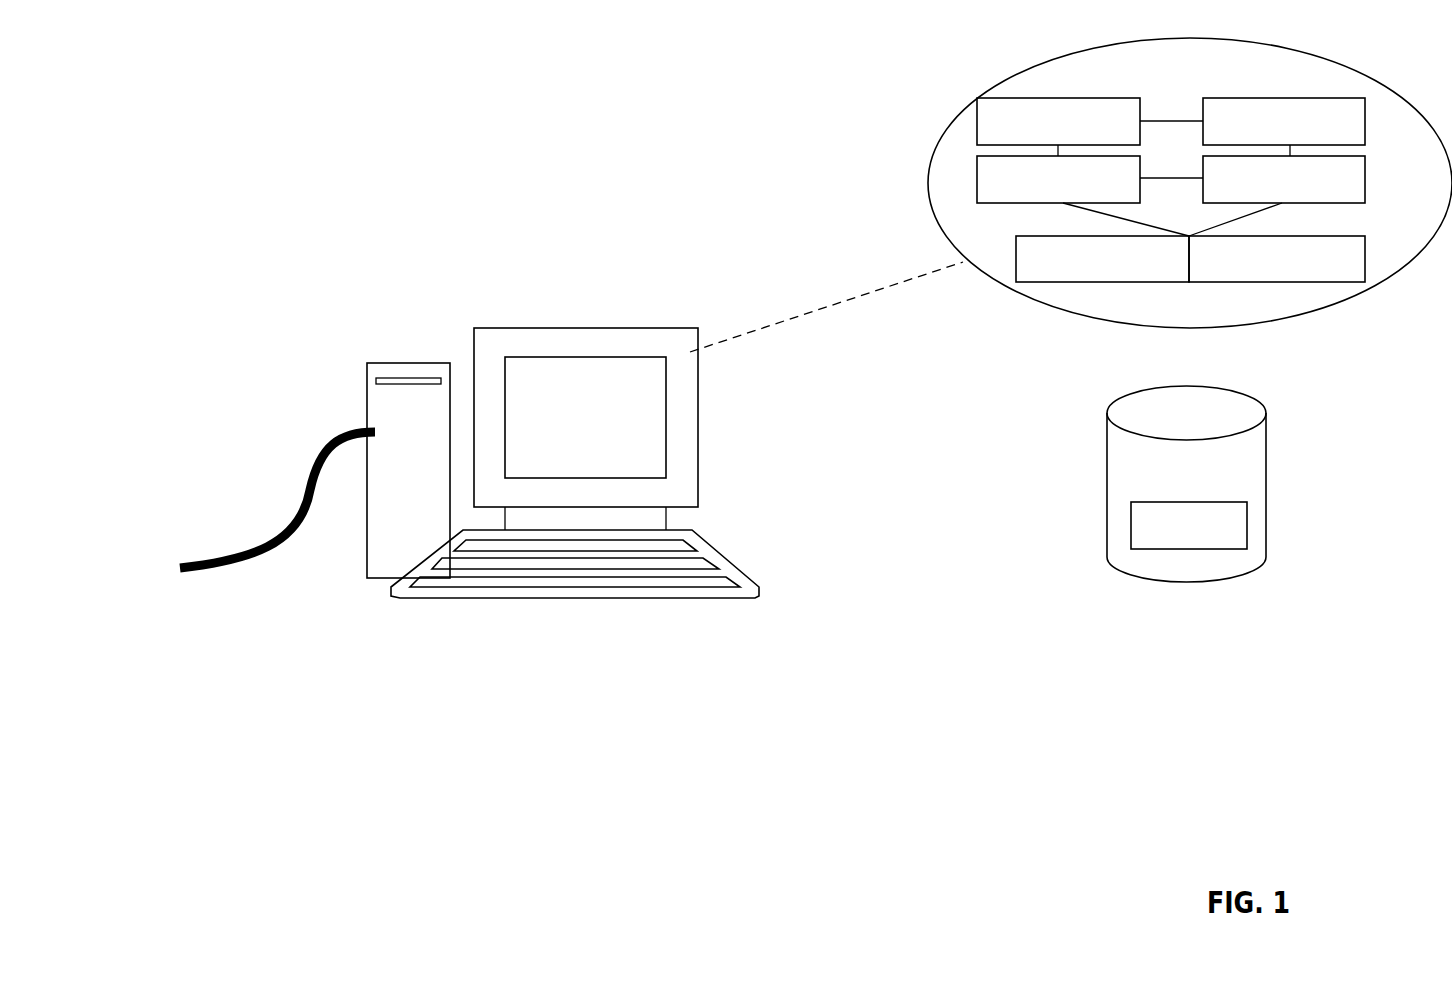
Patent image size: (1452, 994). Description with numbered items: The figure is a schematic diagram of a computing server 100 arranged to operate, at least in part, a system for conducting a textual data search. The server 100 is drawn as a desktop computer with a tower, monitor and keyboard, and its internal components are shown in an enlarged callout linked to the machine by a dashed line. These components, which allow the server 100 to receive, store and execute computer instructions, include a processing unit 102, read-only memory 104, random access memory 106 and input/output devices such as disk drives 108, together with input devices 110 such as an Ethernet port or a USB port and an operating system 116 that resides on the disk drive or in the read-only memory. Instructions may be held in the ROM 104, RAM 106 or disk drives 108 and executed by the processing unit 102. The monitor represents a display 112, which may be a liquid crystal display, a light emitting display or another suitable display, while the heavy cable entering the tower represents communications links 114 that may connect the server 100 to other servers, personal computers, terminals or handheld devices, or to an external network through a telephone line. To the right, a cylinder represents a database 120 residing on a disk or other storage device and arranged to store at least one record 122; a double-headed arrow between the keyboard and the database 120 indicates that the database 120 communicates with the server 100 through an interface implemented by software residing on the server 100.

The computing server 100 is at (563, 486).
The processing unit 102 is at (1058, 121).
The read-only memory (ROM) 104 is at (1284, 121).
The random access memory (RAM) 106 is at (1058, 179).
The disk drive 108 is at (1284, 179).
The input devices 110 is at (1102, 259).
The display 112 is at (591, 312).
The communications links 114 is at (232, 526).
The operating system 116 is at (1277, 259).
The database 120 is at (1004, 484).
The record 122 is at (1189, 525).